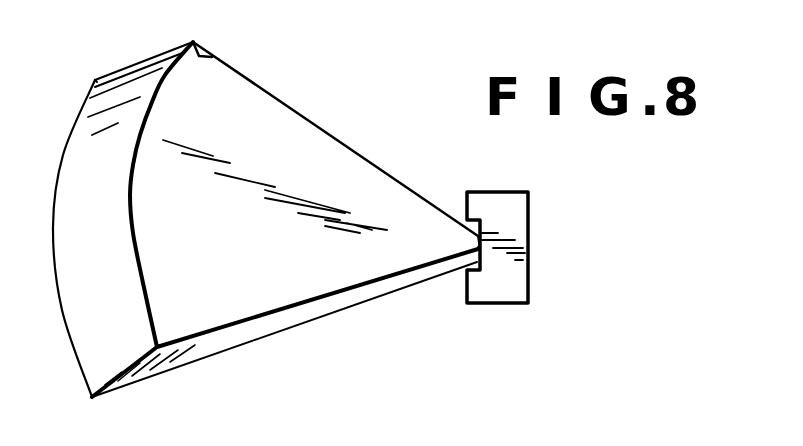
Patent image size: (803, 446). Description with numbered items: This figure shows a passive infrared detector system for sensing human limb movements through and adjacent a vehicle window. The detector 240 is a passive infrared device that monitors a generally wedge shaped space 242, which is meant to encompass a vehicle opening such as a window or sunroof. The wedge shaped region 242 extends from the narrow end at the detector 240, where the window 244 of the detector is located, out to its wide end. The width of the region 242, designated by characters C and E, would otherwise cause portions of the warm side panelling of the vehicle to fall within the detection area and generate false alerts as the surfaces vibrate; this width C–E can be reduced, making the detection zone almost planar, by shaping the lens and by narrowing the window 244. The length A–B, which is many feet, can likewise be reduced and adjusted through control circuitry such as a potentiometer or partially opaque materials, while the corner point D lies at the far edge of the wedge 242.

The detector 240 is at (521, 219).
The wedge shaped space 242 is at (293, 128).
The window 244 is at (456, 242).
The point A is at (478, 247).
The point B is at (132, 203).
The point C is at (212, 56).
The corner point D is at (162, 343).
The point E is at (96, 79).